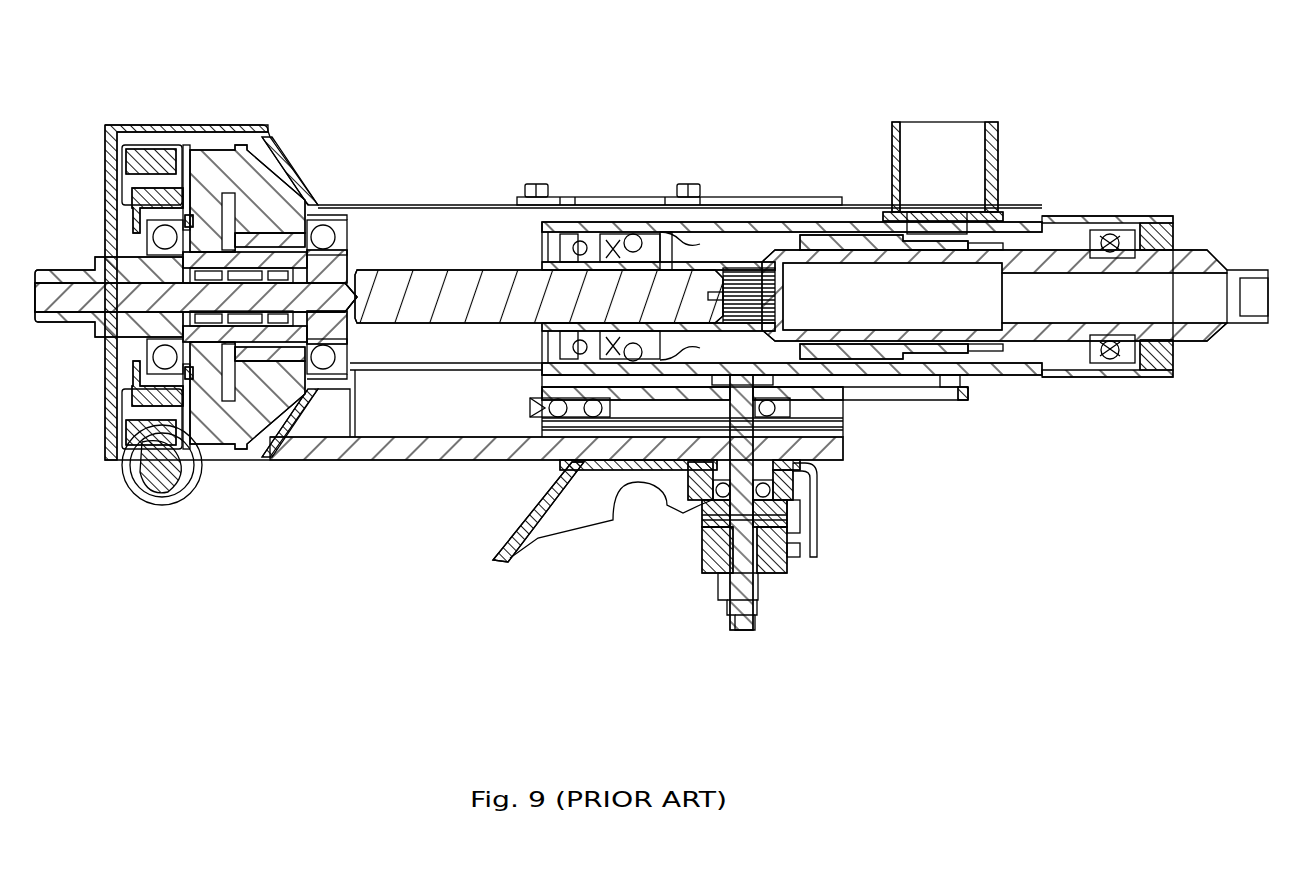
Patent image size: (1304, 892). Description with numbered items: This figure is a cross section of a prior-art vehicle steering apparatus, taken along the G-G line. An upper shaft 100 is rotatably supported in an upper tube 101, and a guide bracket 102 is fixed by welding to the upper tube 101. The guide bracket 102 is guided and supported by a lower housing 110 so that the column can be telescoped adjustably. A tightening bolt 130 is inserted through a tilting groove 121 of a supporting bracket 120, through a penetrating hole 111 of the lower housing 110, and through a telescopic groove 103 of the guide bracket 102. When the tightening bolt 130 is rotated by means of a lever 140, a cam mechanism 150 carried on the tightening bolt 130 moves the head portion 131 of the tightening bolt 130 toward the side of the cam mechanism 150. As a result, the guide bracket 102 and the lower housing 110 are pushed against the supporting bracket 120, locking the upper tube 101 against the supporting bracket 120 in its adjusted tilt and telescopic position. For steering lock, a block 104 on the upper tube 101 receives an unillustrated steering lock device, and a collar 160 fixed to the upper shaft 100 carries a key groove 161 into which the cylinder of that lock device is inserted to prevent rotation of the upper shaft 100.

The upper shaft 100 is at (1030, 342).
The upper tube 101 is at (990, 363).
The guide bracket 102 is at (963, 393).
The telescopic groove 103 is at (673, 237).
The block 104 is at (998, 155).
The lower housing 110 is at (408, 452).
The penetrating hole 111 is at (735, 447).
The supporting bracket 120 is at (535, 520).
The tilting groove 121 is at (738, 450).
The tightening bolt 130 is at (747, 620).
The head portion 131 is at (775, 377).
The lever 140 is at (777, 563).
The cam mechanism 150 is at (793, 523).
The collar 160 is at (862, 243).
The key groove 161 is at (947, 220).